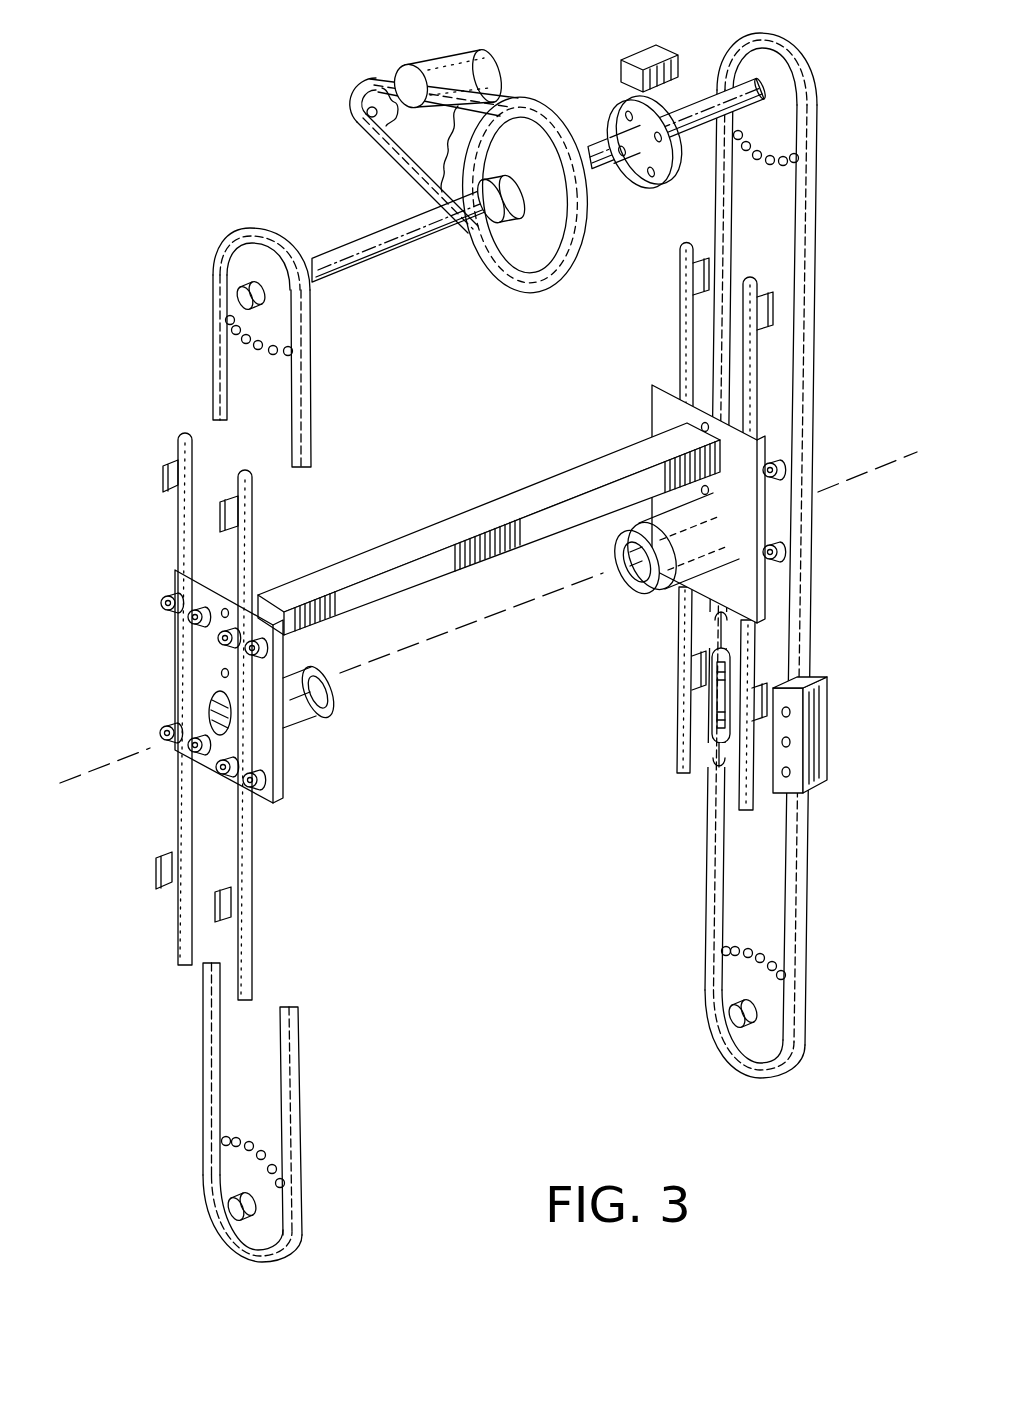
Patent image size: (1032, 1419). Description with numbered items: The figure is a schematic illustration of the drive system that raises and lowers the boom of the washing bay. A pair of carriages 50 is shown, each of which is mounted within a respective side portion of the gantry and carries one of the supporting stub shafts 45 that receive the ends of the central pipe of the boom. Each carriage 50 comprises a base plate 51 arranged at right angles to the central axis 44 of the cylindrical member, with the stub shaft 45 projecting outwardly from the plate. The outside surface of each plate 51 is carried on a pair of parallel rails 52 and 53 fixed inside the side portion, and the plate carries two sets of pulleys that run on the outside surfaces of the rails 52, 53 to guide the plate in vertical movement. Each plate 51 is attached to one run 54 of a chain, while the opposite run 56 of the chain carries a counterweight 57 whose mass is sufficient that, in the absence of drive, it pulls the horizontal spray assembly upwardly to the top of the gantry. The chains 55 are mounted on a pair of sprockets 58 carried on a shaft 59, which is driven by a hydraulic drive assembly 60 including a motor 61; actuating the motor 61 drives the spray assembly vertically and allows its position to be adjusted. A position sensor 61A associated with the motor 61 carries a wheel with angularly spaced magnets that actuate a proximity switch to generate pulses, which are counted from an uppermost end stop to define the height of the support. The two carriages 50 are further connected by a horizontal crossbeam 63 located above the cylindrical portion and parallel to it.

The central axis 44 is at (853, 478).
The stub shaft 45 is at (632, 598).
The carriage 50 is at (429, 585).
The base plate 51 is at (660, 420).
The rail 52 is at (762, 373).
The rail 53 is at (677, 352).
The run of chain 54 is at (217, 395).
The chain 55 is at (824, 182).
The opposite run of chain 56 is at (810, 907).
The counterweight 57 is at (830, 737).
The sprocket 58 is at (780, 80).
The shaft 59 is at (372, 240).
The hydraulic drive assembly 60 is at (385, 180).
The motor 61 is at (425, 60).
The position sensor 61A is at (628, 55).
The horizontal crossbeam 63 is at (503, 490).